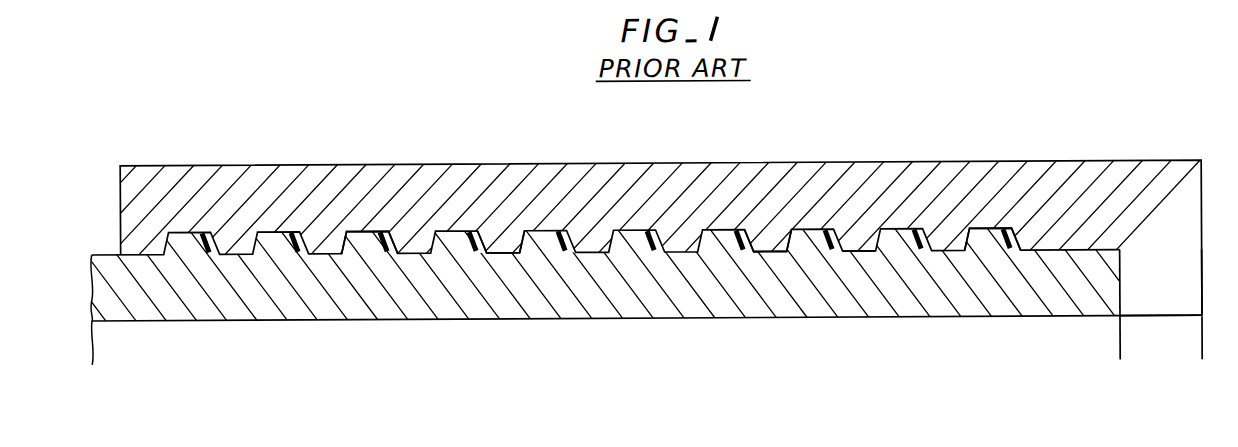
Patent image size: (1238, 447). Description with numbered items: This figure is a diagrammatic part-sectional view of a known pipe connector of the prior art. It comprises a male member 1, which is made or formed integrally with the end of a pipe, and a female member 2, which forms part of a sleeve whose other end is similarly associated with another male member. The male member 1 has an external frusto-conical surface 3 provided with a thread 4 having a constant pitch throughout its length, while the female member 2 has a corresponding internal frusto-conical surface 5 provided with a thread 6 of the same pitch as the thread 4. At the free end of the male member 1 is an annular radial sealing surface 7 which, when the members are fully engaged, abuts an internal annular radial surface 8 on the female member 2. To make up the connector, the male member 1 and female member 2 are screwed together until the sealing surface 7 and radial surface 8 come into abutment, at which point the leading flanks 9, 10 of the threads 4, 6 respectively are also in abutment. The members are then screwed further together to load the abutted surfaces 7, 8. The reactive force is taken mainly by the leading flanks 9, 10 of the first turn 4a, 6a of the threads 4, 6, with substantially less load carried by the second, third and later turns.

The male member 1 is at (820, 307).
The female member 2 is at (577, 176).
The external frusto-conical surface 3 is at (512, 244).
The thread 4 is at (352, 252).
The first turn of thread 4a is at (977, 235).
The internal frusto-conical surface 5 is at (855, 268).
The thread 6 is at (338, 251).
The first turn of thread 6a is at (953, 248).
The annular radial sealing surface 7 is at (1125, 286).
The internal annular radial surface 8 is at (1118, 310).
The leading flank 9 is at (778, 253).
The leading flank 10 is at (778, 254).